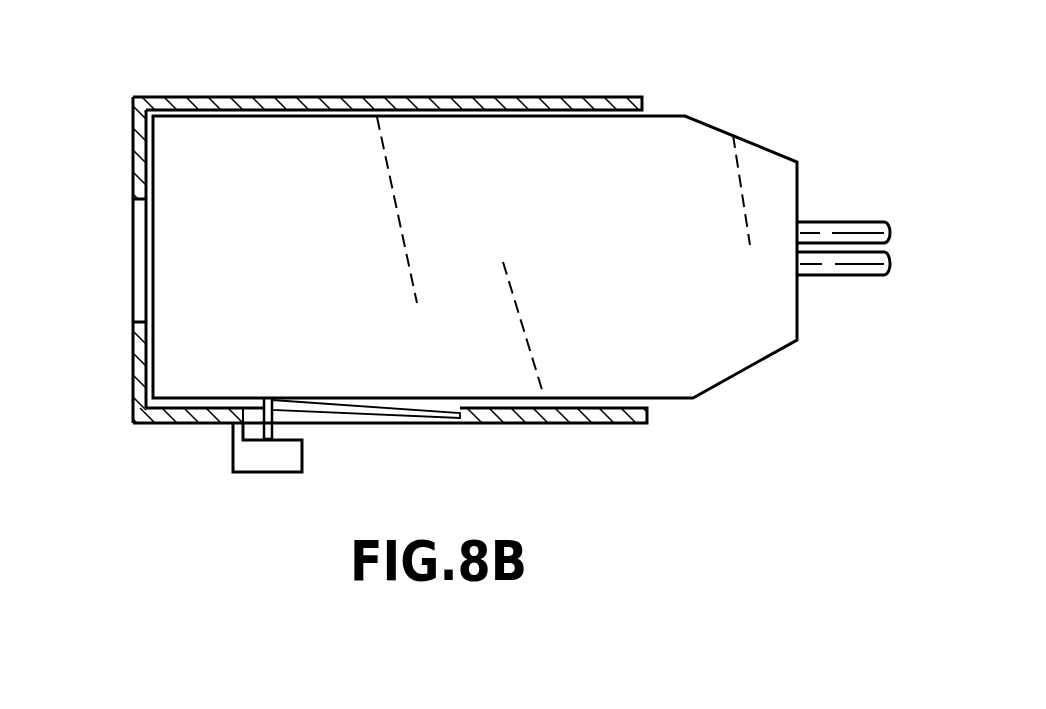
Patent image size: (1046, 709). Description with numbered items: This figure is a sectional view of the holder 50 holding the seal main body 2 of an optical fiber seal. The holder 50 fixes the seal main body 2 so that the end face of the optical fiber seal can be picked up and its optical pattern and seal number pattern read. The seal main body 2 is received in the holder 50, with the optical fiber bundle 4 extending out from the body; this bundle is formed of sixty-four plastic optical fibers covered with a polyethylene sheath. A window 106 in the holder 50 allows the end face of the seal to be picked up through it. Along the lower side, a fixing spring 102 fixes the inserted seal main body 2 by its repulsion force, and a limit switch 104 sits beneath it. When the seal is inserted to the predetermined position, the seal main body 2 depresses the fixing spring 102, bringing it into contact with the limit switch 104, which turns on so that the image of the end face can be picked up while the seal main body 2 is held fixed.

The holder 50 is at (463, 86).
The window 106 is at (133, 253).
The seal main body 2 is at (690, 137).
The optical fiber bundle 4 is at (889, 262).
The fixing spring 102 is at (393, 417).
The limit switch 104 is at (233, 462).